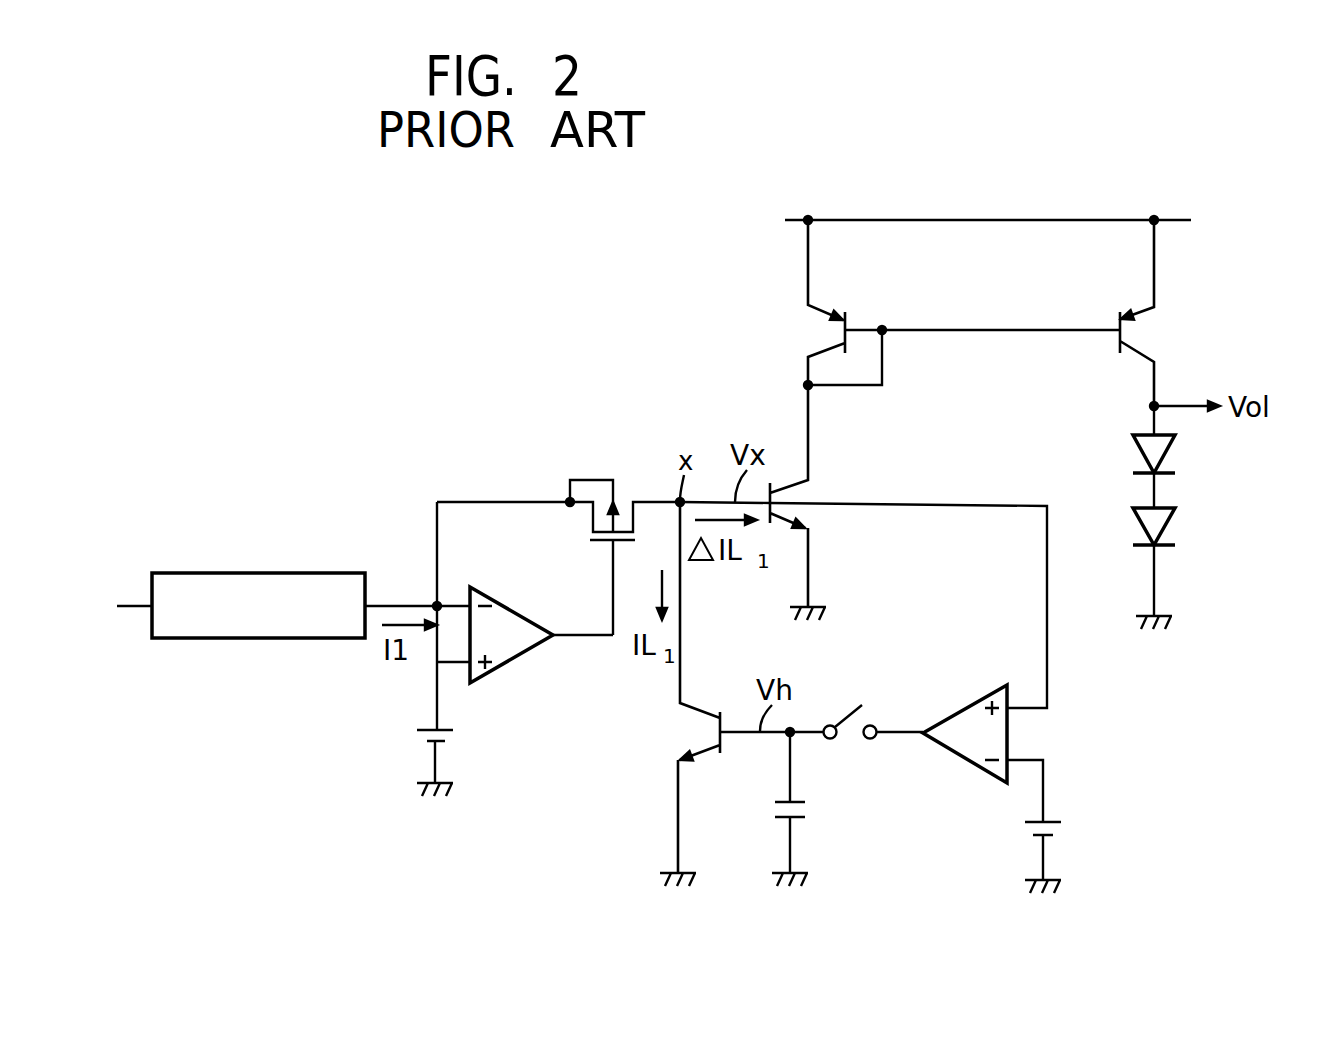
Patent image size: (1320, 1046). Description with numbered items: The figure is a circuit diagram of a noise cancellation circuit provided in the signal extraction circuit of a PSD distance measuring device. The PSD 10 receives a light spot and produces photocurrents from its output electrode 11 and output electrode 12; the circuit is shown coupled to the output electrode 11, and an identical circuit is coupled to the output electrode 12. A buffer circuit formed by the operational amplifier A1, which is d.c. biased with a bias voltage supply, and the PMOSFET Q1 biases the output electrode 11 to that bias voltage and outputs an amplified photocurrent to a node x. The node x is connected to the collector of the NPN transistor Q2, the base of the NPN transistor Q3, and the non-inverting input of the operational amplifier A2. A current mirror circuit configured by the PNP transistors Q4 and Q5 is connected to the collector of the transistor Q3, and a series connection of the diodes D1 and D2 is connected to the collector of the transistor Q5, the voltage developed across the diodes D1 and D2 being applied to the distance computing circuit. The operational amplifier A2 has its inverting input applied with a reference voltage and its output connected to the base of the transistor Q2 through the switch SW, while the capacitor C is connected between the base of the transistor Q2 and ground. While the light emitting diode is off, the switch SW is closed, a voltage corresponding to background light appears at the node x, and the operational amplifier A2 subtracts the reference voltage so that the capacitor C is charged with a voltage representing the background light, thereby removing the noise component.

The PSD 10 is at (293, 568).
The output electrode 11 is at (394, 604).
The output electrode 12 is at (133, 600).
The operational amplifier A1 is at (515, 610).
The operational amplifier A2 is at (965, 706).
The PMOSFET Q1 is at (622, 500).
The NPN transistor Q2 is at (682, 732).
The NPN transistor Q3 is at (800, 497).
The PNP transistor Q4 is at (812, 330).
The PNP transistor Q5 is at (1150, 329).
The diode D1 is at (1171, 450).
The diode D2 is at (1171, 521).
The capacitor C is at (773, 810).
The switch SW is at (853, 740).